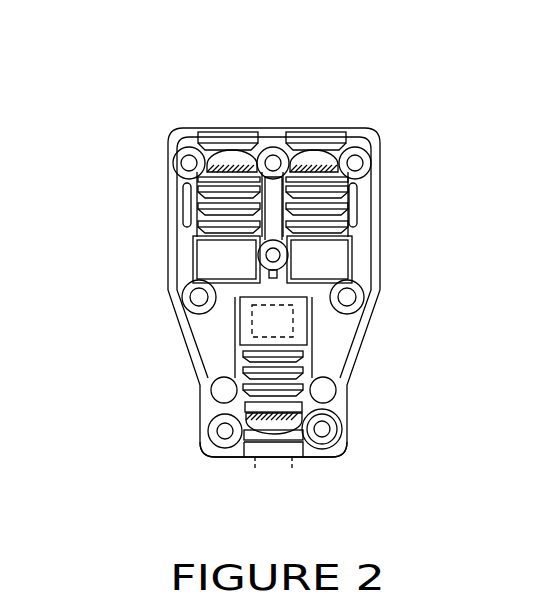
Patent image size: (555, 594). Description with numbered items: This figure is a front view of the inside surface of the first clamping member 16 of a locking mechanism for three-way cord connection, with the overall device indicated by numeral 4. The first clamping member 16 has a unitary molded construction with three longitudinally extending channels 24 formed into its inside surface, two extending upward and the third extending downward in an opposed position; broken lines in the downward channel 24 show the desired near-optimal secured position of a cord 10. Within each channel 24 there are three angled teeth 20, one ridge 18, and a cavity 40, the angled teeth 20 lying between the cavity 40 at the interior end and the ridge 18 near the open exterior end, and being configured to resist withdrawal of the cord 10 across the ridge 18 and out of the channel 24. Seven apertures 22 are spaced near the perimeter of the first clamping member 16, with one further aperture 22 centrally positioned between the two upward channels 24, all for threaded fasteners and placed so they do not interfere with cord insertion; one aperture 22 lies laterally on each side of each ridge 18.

The connector assembly 4 is at (157, 118).
The cord 10 is at (255, 473).
The first clamping member 16 is at (172, 205).
The ridge 18 is at (232, 165).
The angled teeth 20 is at (300, 225).
The apertures 22 is at (353, 306).
The channels 24 is at (230, 125).
The cavity 40 is at (283, 297).